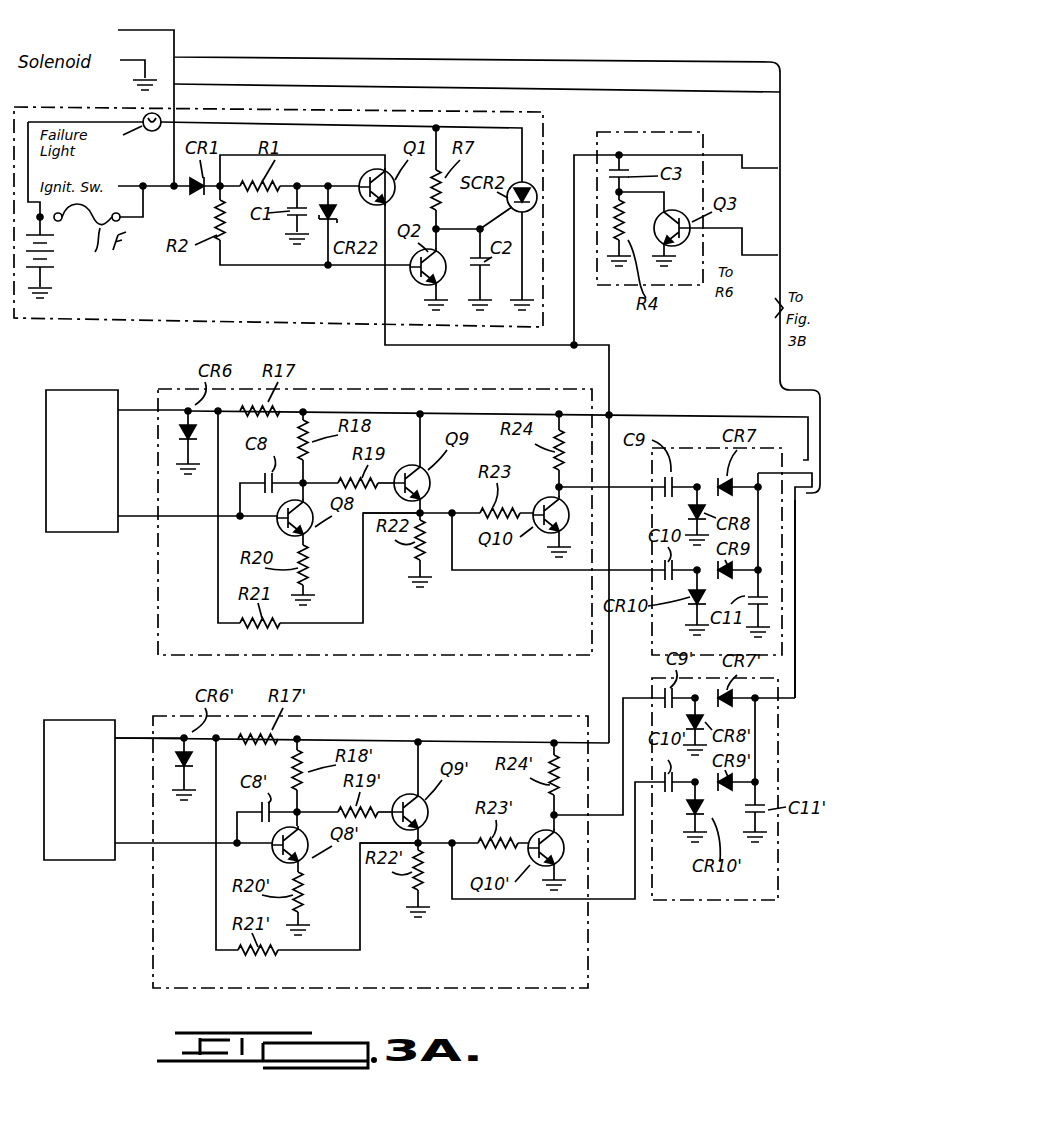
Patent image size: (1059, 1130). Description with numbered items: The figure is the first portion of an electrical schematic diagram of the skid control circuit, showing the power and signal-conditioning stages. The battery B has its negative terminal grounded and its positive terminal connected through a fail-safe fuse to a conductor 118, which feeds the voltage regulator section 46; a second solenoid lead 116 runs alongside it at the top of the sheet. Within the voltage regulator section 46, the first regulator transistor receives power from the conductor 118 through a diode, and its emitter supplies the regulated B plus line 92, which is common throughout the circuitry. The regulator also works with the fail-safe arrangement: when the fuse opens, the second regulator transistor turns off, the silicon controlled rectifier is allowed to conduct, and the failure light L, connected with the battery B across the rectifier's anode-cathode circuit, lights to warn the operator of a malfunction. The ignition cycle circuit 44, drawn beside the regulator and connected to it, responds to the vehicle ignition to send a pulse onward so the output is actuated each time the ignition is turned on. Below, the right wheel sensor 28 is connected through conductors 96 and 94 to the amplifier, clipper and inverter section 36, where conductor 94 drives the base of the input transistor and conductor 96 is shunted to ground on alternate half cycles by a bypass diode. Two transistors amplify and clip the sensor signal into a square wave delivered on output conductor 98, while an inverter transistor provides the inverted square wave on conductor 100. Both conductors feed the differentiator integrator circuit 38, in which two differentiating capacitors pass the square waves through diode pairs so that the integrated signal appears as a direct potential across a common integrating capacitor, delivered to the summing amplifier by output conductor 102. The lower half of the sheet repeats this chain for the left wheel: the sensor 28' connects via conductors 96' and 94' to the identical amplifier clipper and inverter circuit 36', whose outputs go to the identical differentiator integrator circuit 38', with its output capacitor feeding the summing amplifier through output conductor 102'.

The solenoid lead 116 is at (690, 42).
The conductor 118 is at (713, 90).
The ignition cycle circuit 44 is at (700, 148).
The B plus line 92 is at (760, 168).
The voltage regulator section 46 is at (125, 318).
The sensor 28 is at (81, 485).
The conductor 96 is at (153, 385).
The conductor 94 is at (176, 548).
The amplifier, clipper and inverter section 36 is at (334, 522).
The differentiator integrator circuit 38 is at (717, 523).
The conductor 100 is at (634, 478).
The output conductor 102 is at (787, 548).
The output conductor 98 is at (505, 580).
The sensor 28' is at (79, 771).
The conductor 96' is at (149, 710).
The conductor 94' is at (164, 875).
The amplifier clipper and inverter circuit 36' is at (330, 852).
The differentiator integrator circuit 38' is at (714, 814).
The output conductor 102' is at (814, 599).
The failure light L is at (157, 113).
The battery B is at (54, 250).